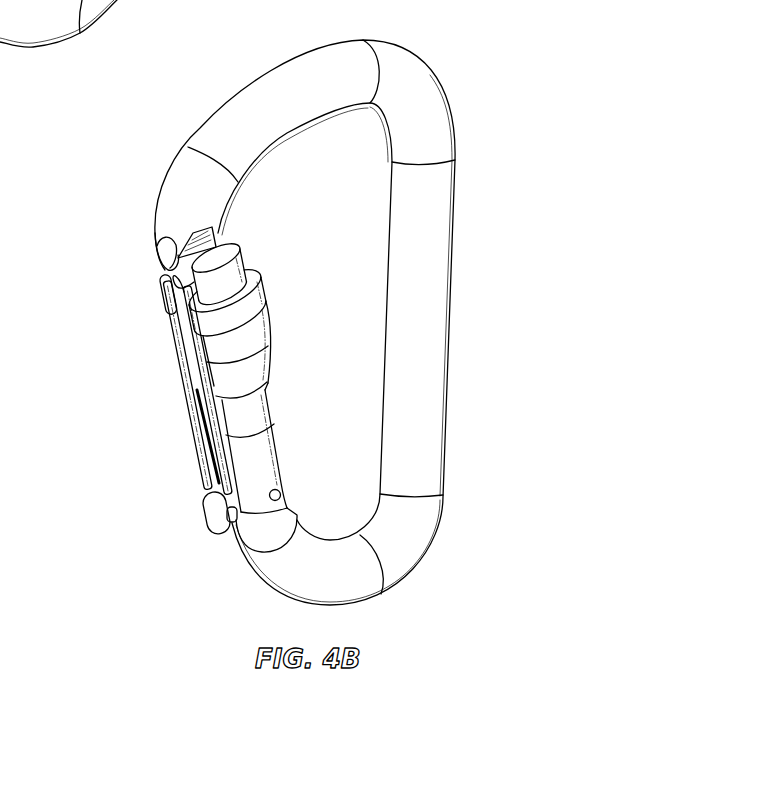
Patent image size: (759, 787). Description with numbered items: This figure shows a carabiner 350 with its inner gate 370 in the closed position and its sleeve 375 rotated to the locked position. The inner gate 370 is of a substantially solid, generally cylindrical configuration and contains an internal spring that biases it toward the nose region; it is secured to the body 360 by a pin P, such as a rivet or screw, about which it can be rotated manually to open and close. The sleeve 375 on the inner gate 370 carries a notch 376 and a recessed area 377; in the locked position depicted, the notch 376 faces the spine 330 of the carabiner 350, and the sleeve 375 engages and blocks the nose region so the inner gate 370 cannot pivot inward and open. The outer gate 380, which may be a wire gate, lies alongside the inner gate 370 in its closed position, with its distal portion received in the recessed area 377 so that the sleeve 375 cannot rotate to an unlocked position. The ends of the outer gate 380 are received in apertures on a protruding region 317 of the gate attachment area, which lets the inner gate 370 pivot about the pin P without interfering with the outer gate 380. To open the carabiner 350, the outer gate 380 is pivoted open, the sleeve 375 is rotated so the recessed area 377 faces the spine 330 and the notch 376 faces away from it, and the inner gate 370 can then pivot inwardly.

The protruding region 317 is at (228, 527).
The spine 330 is at (433, 233).
The carabiner 350 is at (181, 388).
The body 360 is at (432, 67).
The inner gate 370 is at (262, 363).
The sleeve 375 is at (242, 304).
The notch 376 is at (246, 262).
The recessed area 377 is at (160, 310).
The outer gate 380 is at (200, 437).
The pin P is at (281, 496).